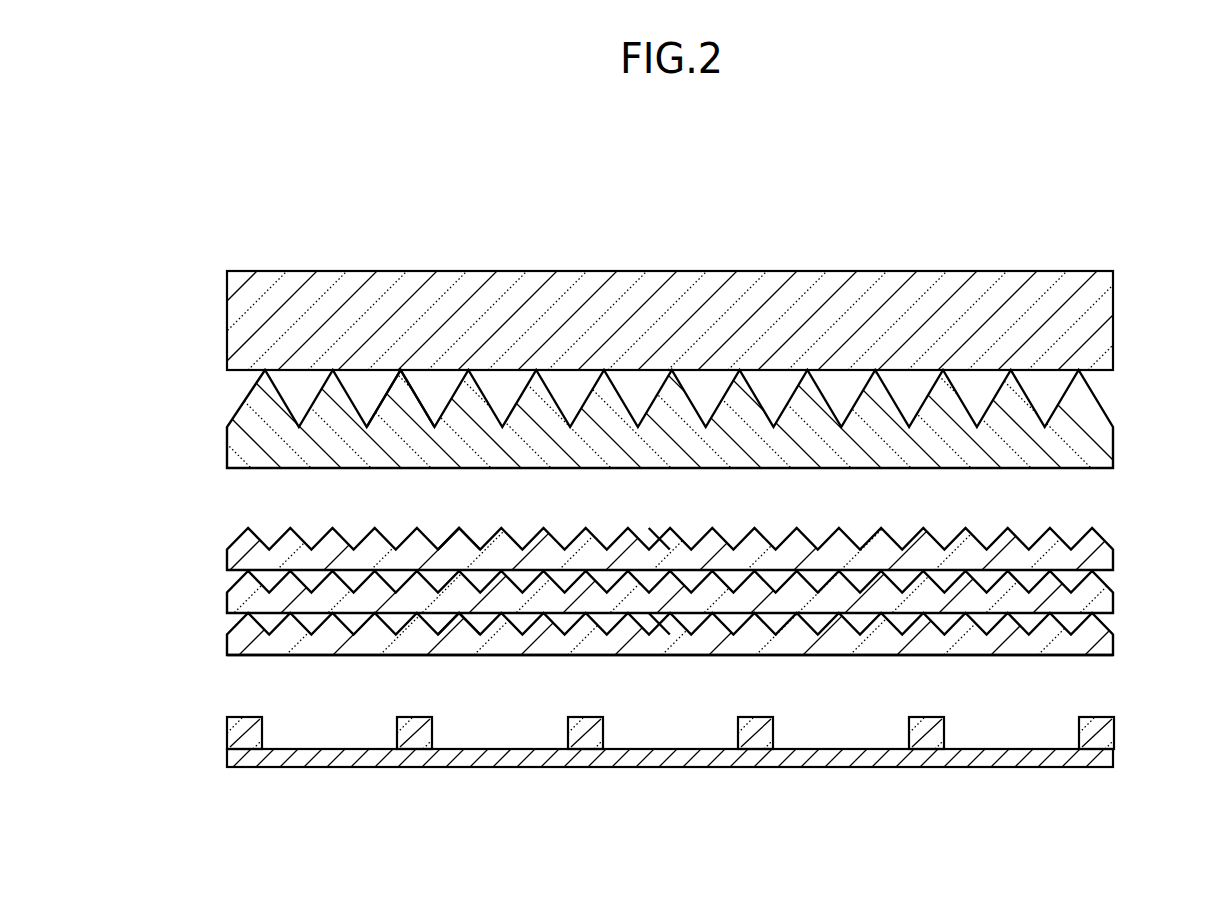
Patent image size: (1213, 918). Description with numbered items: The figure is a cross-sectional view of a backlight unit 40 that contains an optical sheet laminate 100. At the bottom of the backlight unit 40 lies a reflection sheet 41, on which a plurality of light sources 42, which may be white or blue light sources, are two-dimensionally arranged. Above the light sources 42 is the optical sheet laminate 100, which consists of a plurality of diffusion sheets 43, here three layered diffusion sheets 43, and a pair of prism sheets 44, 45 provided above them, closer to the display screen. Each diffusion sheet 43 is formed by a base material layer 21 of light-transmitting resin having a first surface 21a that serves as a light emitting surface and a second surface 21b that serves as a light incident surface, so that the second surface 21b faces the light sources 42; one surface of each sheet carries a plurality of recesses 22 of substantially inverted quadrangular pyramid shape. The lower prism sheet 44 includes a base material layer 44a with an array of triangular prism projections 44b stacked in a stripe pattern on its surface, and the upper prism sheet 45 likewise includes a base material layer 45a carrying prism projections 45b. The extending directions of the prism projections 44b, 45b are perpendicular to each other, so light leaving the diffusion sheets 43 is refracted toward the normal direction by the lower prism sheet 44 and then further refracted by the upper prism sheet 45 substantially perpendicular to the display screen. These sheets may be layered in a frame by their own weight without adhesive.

The optical sheet laminate 100 is at (1122, 271).
The backlight unit 40 is at (958, 224).
The upper prism sheet 45 is at (215, 332).
The base material layer 45a is at (287, 373).
The prism projections 45b is at (283, 271).
The lower prism sheet 44 is at (215, 443).
The base material layer 44a is at (277, 468).
The prism projections 44b is at (391, 388).
The diffusion sheets 43 is at (211, 646).
The base material layer 21 is at (252, 650).
The first surface 21a is at (702, 533).
The second surface 21b is at (815, 578).
The recesses 22 is at (482, 530).
The light sources 42 is at (397, 733).
The reflection sheet 41 is at (227, 758).